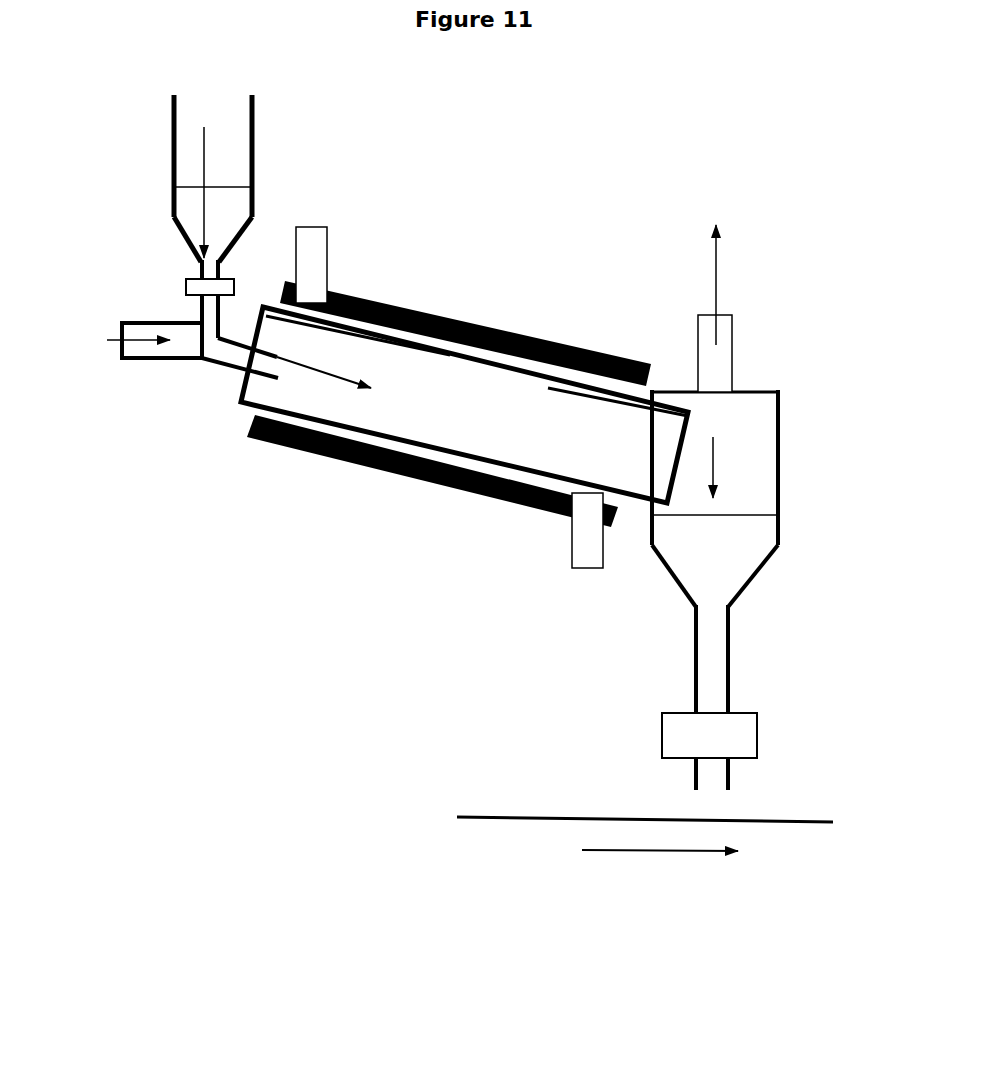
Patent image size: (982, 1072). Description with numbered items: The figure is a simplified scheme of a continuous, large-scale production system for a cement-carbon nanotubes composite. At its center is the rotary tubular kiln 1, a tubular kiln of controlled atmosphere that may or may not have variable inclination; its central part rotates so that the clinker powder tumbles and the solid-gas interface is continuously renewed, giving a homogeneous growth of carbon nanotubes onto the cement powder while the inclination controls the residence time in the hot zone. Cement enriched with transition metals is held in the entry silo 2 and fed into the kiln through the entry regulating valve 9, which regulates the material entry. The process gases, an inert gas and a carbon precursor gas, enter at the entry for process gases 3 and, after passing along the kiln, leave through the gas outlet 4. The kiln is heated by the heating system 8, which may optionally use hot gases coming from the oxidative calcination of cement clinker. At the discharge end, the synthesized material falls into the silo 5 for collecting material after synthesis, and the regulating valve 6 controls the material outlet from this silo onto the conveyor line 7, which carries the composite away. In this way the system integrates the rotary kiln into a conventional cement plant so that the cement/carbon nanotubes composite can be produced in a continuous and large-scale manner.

The rotary tubular kiln 1 is at (464, 405).
The entry silo 2 is at (254, 195).
The entry for process gases 3 is at (154, 372).
The gas outlet 4 is at (683, 313).
The collecting silo 5 is at (647, 577).
The regulating valve for material outlet 6 is at (647, 727).
The conveyor line 7 is at (503, 833).
The heating system 8 is at (400, 482).
The entry regulating valve 9 is at (168, 278).